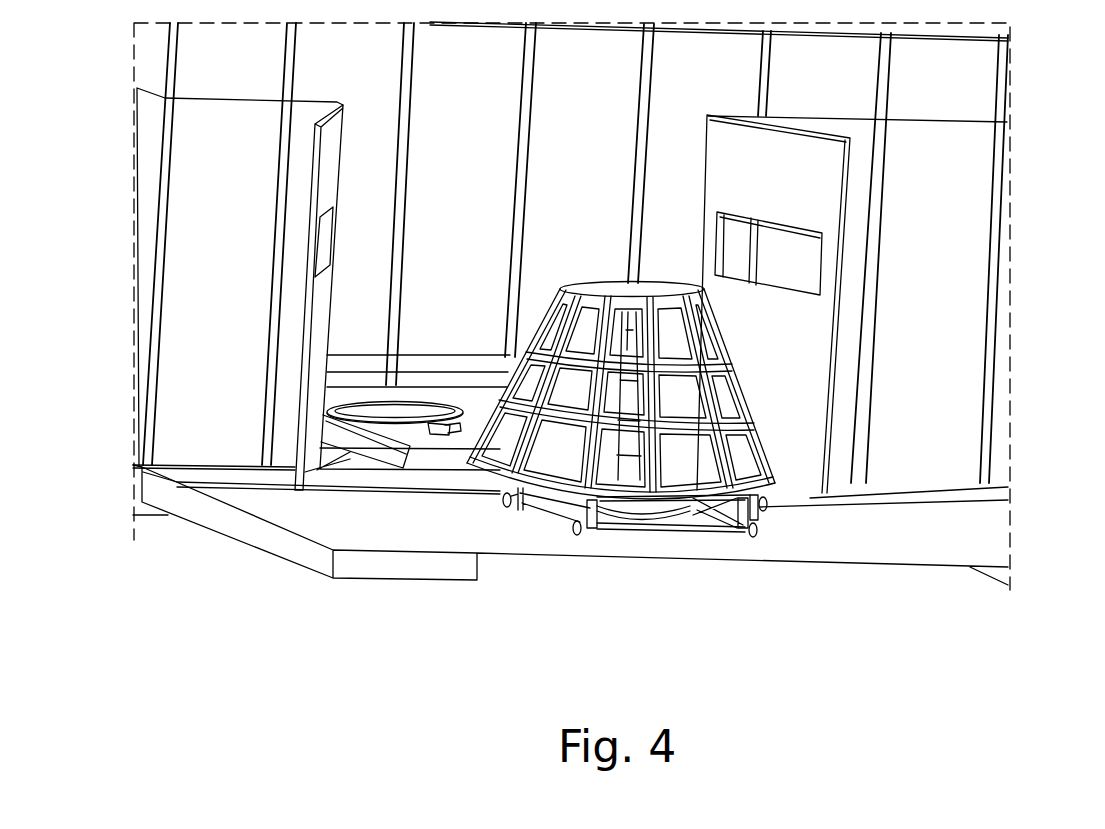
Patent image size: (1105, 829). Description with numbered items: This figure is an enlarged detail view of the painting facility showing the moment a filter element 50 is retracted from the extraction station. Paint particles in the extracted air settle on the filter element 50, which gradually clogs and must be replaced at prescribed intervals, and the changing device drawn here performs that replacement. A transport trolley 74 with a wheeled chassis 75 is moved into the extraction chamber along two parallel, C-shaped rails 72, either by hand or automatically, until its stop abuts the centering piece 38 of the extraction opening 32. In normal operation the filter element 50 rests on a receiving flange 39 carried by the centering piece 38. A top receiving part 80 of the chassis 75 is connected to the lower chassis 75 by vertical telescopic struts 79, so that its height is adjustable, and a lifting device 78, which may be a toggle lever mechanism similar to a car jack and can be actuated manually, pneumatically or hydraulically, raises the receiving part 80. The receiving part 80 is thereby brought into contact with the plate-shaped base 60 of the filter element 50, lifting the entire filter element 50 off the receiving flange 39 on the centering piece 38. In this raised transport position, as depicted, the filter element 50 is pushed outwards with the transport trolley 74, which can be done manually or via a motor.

The extraction opening 32 is at (377, 408).
The centering piece 38 is at (427, 432).
The receiving flange 39 is at (440, 428).
The filter element 50 is at (735, 380).
The plate-shaped base 60 is at (757, 500).
The C-shaped rails 72 is at (390, 455).
The transport trolley 74 is at (615, 533).
The chassis 75 is at (589, 503).
The lifting device 78 is at (540, 497).
The vertical telescopic struts 79 is at (740, 532).
The receiving part 80 is at (628, 498).